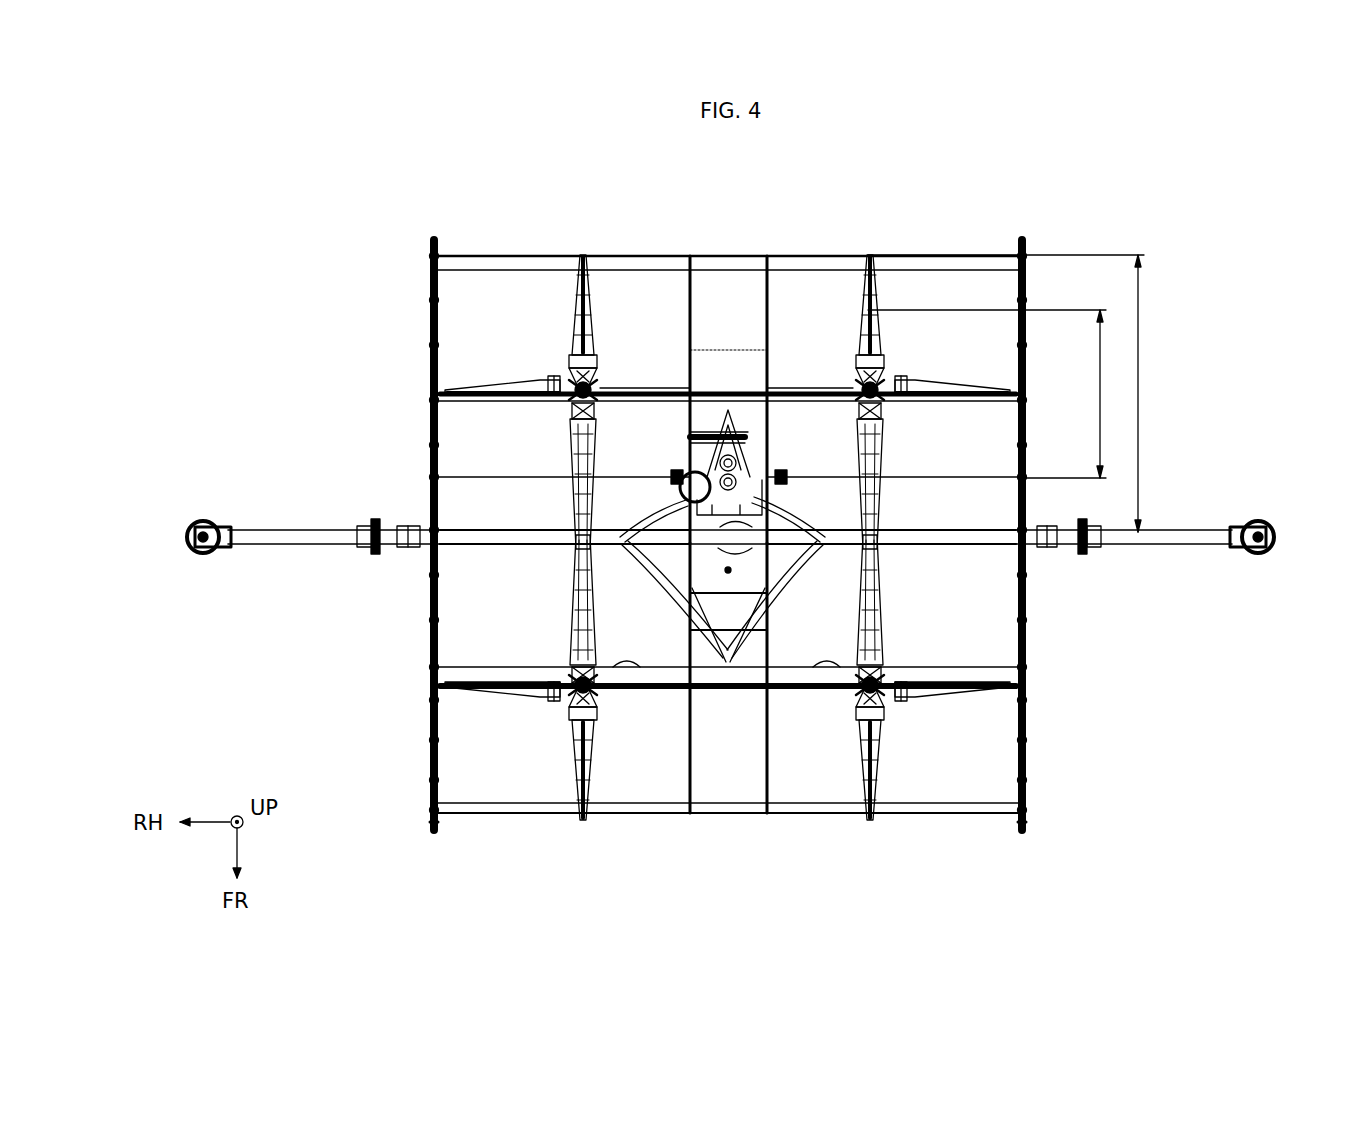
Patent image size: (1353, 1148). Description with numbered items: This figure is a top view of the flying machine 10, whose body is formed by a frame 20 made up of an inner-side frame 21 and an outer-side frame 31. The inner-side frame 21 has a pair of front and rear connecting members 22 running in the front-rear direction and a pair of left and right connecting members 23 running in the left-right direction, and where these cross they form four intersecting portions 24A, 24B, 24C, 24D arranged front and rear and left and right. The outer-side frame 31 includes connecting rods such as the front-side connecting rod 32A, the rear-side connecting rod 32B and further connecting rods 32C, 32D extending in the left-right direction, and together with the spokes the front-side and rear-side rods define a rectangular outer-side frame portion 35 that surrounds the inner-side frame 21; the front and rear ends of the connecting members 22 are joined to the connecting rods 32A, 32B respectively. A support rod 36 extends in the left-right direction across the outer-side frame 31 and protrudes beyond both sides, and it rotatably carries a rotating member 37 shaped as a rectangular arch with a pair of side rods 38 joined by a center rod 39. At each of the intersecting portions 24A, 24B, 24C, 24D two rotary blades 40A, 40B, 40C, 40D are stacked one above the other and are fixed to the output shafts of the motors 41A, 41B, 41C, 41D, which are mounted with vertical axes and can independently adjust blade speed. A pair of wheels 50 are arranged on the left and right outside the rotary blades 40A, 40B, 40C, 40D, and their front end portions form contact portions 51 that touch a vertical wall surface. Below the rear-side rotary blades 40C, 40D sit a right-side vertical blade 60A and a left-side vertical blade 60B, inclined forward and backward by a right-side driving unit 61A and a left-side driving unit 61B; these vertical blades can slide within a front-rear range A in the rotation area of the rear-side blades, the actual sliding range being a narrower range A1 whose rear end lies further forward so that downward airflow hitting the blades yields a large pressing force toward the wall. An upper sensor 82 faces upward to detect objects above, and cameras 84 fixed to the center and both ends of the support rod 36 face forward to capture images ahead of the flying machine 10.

The flying machine 10 is at (1057, 216).
The frame 20 is at (534, 256).
The inner-side frame 21 is at (760, 386).
The connecting members 22 is at (560, 512).
The connecting members 23 is at (703, 390).
The intersecting portion 24A is at (568, 702).
The intersecting portion 24B is at (858, 702).
The intersecting portion 24C is at (568, 408).
The intersecting portion 24D is at (895, 410).
The outer-side frame 31 is at (838, 256).
The front-side connecting rod 32A is at (727, 815).
The rear-side connecting rod 32B is at (730, 256).
The connecting rod 32C is at (762, 670).
The connecting rod 32D is at (770, 418).
The outer-side frame portion 35 is at (527, 815).
The support rod 36 is at (317, 528).
The rotating member 37 is at (493, 547).
The side rods 38 is at (369, 554).
The center rod 39 is at (548, 547).
The rotary blades 40A is at (490, 691).
The rotary blades 40B is at (940, 697).
The rotary blades 40C is at (565, 312).
The rotary blades 40D is at (890, 336).
The motor 41A is at (606, 700).
The motor 41B is at (896, 692).
The motor 41C is at (600, 384).
The motor 41D is at (858, 384).
The wheels 50 is at (432, 720).
The contact portions 51 is at (433, 832).
The right-side vertical blade 60A is at (497, 494).
The left-side vertical blade 60B is at (923, 500).
The right-side driving unit 61A is at (656, 486).
The left-side driving unit 61B is at (790, 512).
The upper sensor 82 is at (688, 468).
The cameras 84 is at (216, 556).
The range A is at (1142, 398).
The range A1 is at (1098, 398).